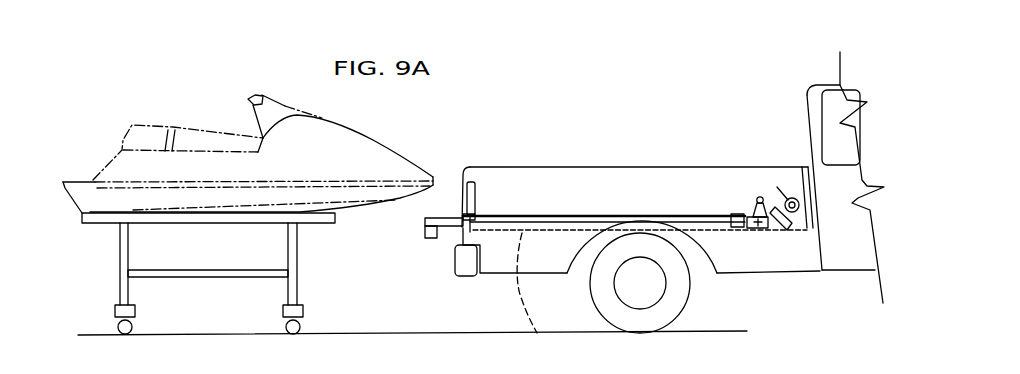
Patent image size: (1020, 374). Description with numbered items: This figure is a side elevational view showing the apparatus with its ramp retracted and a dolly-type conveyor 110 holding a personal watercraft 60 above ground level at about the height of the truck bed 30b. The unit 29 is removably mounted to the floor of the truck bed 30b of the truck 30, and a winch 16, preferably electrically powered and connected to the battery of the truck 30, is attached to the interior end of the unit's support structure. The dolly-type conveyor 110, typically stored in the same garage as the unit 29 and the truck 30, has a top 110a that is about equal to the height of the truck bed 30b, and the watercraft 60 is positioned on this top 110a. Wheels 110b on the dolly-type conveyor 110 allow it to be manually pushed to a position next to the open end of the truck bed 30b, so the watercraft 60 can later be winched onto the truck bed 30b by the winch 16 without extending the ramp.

The personal watercraft 60 is at (380, 146).
The dolly-type conveyor 110 is at (201, 287).
The top of the conveyor 110a is at (95, 216).
The wheels 110b is at (133, 328).
The truck 30 is at (818, 80).
The truck bed 30b is at (537, 333).
The unit 29 is at (713, 208).
The winch 16 is at (791, 199).